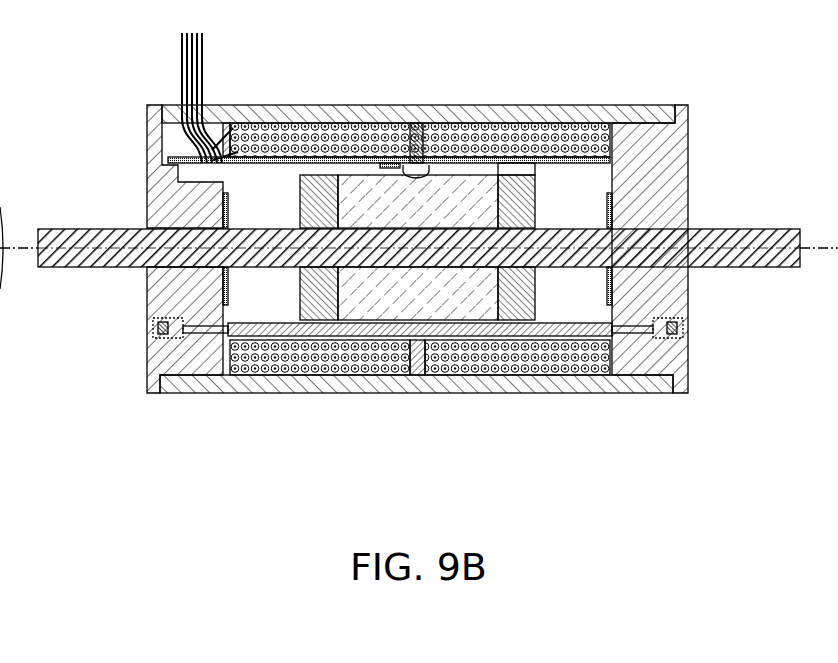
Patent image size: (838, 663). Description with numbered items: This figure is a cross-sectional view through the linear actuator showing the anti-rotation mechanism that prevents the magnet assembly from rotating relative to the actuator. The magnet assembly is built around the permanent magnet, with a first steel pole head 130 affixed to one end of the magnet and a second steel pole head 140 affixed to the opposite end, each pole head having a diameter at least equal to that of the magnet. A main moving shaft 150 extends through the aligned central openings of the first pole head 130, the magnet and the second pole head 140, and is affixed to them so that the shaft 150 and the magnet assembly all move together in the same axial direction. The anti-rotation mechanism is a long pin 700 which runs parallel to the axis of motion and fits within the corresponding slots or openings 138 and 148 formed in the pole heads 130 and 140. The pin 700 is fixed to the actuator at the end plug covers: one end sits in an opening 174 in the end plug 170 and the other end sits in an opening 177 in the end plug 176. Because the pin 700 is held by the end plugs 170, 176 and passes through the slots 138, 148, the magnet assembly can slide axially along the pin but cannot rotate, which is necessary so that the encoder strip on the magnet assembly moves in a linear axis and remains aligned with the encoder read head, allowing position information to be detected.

The first steel pole head 130 is at (315, 307).
The slot 138 is at (330, 327).
The second steel pole head 140 is at (510, 307).
The slot 148 is at (537, 350).
The main moving shaft 150 is at (62, 231).
The end plug 170 is at (160, 198).
The opening 174 is at (147, 329).
The end plug 176 is at (675, 178).
The opening 177 is at (684, 329).
The long pin 700 is at (666, 304).